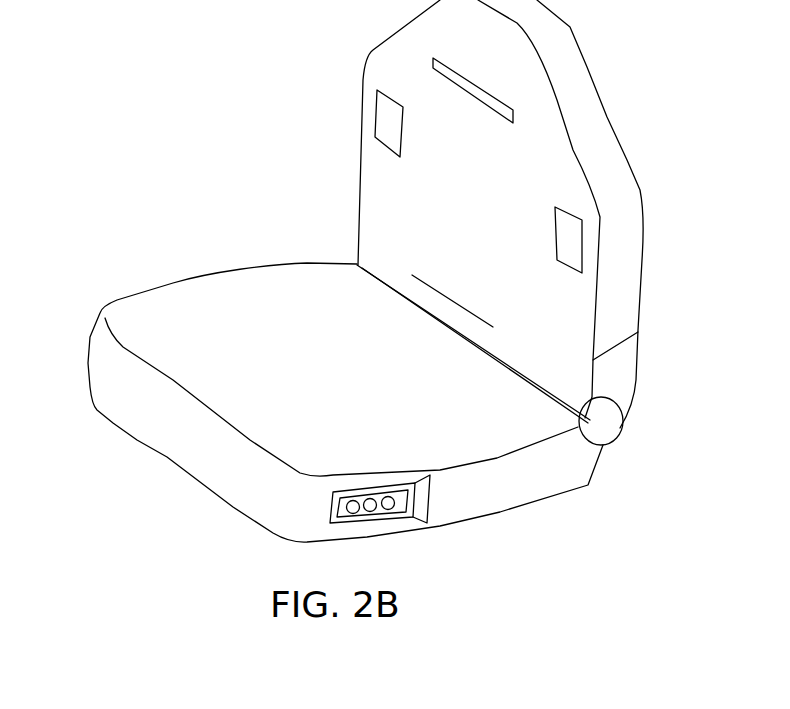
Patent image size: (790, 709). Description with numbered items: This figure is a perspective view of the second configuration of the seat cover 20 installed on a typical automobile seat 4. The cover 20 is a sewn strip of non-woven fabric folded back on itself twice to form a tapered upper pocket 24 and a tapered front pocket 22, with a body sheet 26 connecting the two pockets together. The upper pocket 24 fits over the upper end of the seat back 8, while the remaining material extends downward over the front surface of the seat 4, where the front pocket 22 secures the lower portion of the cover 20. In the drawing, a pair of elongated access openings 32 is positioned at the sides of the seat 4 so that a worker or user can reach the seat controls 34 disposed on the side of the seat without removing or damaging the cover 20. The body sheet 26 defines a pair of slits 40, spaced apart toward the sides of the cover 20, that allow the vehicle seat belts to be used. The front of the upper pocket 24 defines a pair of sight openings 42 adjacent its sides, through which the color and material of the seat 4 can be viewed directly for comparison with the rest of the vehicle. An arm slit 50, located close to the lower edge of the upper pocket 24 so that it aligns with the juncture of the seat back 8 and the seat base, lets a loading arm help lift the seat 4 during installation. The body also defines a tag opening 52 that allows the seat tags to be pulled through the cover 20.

The automobile seat 4 is at (630, 383).
The seat back 8 is at (620, 355).
The cover 20 is at (410, 217).
The front pocket 22 is at (107, 390).
The upper pocket 24 is at (630, 183).
The body sheet 26 is at (312, 278).
The access openings 32 is at (408, 504).
The seat controls 34 is at (353, 510).
The slits 40 is at (362, 265).
The sight openings 42 is at (400, 130).
The arm slit 50 is at (453, 298).
The tag opening 52 is at (473, 90).